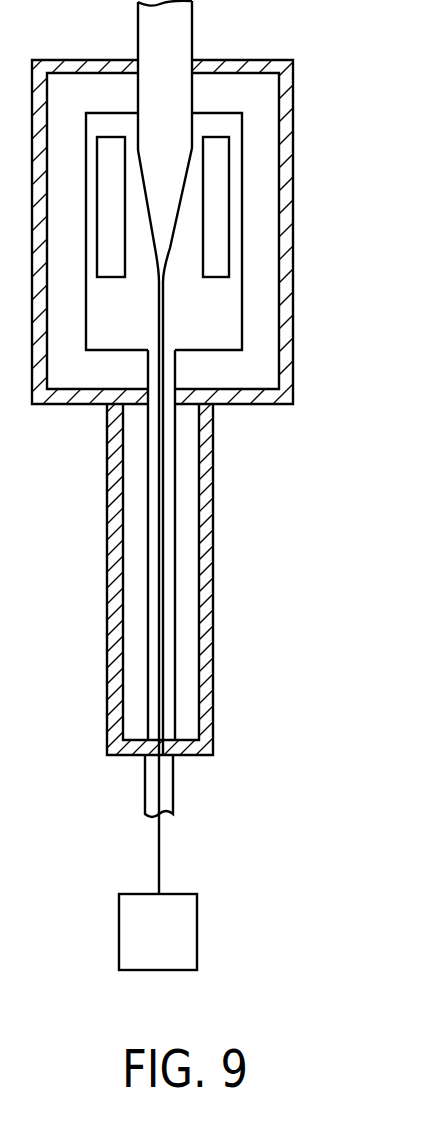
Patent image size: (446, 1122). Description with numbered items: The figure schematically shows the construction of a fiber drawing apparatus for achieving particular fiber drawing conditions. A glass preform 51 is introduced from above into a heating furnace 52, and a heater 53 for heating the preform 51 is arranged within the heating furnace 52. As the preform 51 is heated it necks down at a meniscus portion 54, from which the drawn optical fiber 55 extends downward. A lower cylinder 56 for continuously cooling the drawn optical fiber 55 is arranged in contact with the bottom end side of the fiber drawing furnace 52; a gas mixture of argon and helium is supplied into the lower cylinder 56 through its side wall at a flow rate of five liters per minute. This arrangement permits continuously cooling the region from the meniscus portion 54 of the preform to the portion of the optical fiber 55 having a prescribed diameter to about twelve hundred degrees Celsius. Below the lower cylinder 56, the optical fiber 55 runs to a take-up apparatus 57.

The glass preform 51 is at (193, 27).
The heating furnace 52 is at (289, 101).
The heater 53 is at (217, 168).
The meniscus portion 54 is at (176, 225).
The optical fiber 55 is at (167, 432).
The lower cylinder 56 is at (207, 494).
The take-up apparatus 57 is at (183, 933).